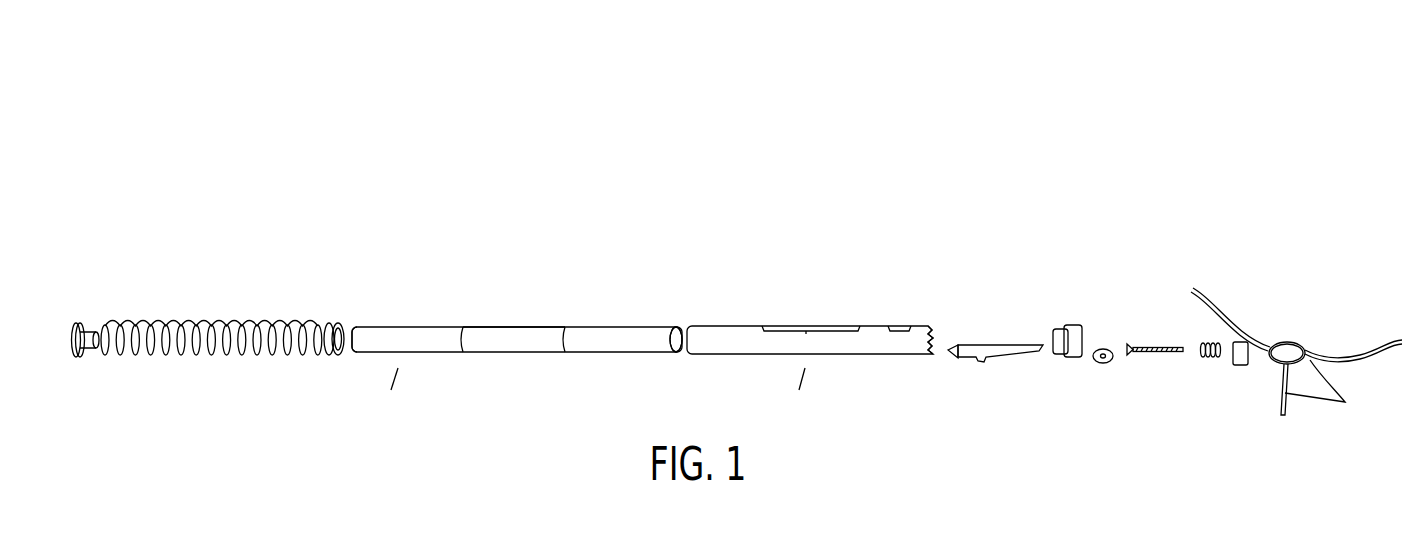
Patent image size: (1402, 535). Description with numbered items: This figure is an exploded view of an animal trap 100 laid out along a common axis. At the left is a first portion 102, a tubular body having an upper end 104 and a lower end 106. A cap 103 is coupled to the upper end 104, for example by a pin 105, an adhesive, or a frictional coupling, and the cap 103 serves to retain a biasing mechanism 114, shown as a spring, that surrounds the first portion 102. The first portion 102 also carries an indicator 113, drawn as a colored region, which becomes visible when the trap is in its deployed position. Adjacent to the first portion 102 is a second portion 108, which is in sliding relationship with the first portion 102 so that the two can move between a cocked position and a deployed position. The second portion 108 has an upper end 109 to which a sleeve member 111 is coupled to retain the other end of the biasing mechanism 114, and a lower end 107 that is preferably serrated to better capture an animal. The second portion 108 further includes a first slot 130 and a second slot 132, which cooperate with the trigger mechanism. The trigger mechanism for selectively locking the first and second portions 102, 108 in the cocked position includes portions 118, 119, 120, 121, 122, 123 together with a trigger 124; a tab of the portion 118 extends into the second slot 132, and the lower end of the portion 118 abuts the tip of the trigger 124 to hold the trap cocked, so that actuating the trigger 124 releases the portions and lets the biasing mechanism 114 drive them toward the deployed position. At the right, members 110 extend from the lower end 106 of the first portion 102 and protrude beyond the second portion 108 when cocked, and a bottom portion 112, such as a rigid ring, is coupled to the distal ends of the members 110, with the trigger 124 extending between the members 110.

The animal trap 100 is at (298, 123).
The first portion 102 is at (413, 330).
The cap 103 is at (80, 322).
The upper end 104 is at (346, 353).
The pin 105 is at (397, 384).
The lower end 106 is at (681, 329).
The lower end 107 is at (937, 334).
The second portion 108 is at (738, 330).
The upper end 109 is at (684, 353).
The members 110 is at (1228, 312).
The sleeve member 111 is at (332, 322).
The bottom portion 112 is at (1288, 341).
The indicator 113 is at (514, 331).
The biasing mechanism 114 is at (187, 322).
The portion 118 is at (993, 347).
The portion 119 is at (800, 381).
The portion 120 is at (1070, 325).
The portion 121 is at (1103, 349).
The portion 122 is at (1205, 360).
The portion 123 is at (1240, 366).
The trigger 124 is at (1153, 352).
The first slot 130 is at (808, 330).
The second slot 132 is at (898, 328).